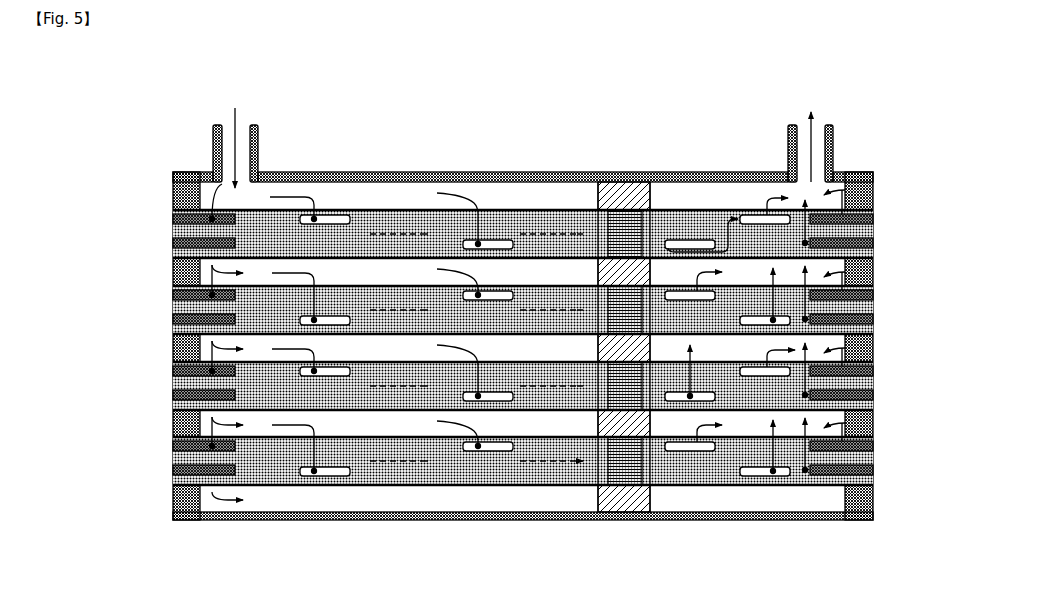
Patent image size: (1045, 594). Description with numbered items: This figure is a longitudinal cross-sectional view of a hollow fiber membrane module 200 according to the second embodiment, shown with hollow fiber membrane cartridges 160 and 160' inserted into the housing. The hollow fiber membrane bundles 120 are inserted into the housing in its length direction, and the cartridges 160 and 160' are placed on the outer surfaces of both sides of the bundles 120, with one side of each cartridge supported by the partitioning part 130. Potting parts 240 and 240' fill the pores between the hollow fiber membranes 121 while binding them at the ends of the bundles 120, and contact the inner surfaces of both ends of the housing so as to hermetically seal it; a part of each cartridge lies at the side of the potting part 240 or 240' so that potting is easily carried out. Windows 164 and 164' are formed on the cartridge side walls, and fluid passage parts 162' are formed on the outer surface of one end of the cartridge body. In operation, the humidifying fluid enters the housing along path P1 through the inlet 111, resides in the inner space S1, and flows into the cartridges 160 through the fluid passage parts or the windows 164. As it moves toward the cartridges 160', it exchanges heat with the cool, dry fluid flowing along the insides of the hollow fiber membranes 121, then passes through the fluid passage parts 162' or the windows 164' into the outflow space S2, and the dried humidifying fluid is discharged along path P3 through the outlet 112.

The inlet 111 is at (213, 150).
The outlet 112 is at (835, 150).
The hollow fiber membrane bundles 120 is at (600, 222).
The hollow fiber membranes 121 is at (612, 215).
The partitioning part 130 is at (632, 210).
The hollow fiber membrane cartridge 160 is at (430, 347).
The hollow fiber membrane cartridge 160' is at (728, 340).
The fluid passage parts 162' is at (871, 344).
The windows 164 is at (325, 298).
The windows 164' is at (446, 309).
The hollow fiber membrane module 200 is at (737, 115).
The potting part 240 is at (489, 339).
The potting part 240' is at (890, 339).
The inner space S1 is at (497, 192).
The outflow space S2 is at (717, 192).
The path P1 is at (233, 148).
The path P3 is at (810, 147).